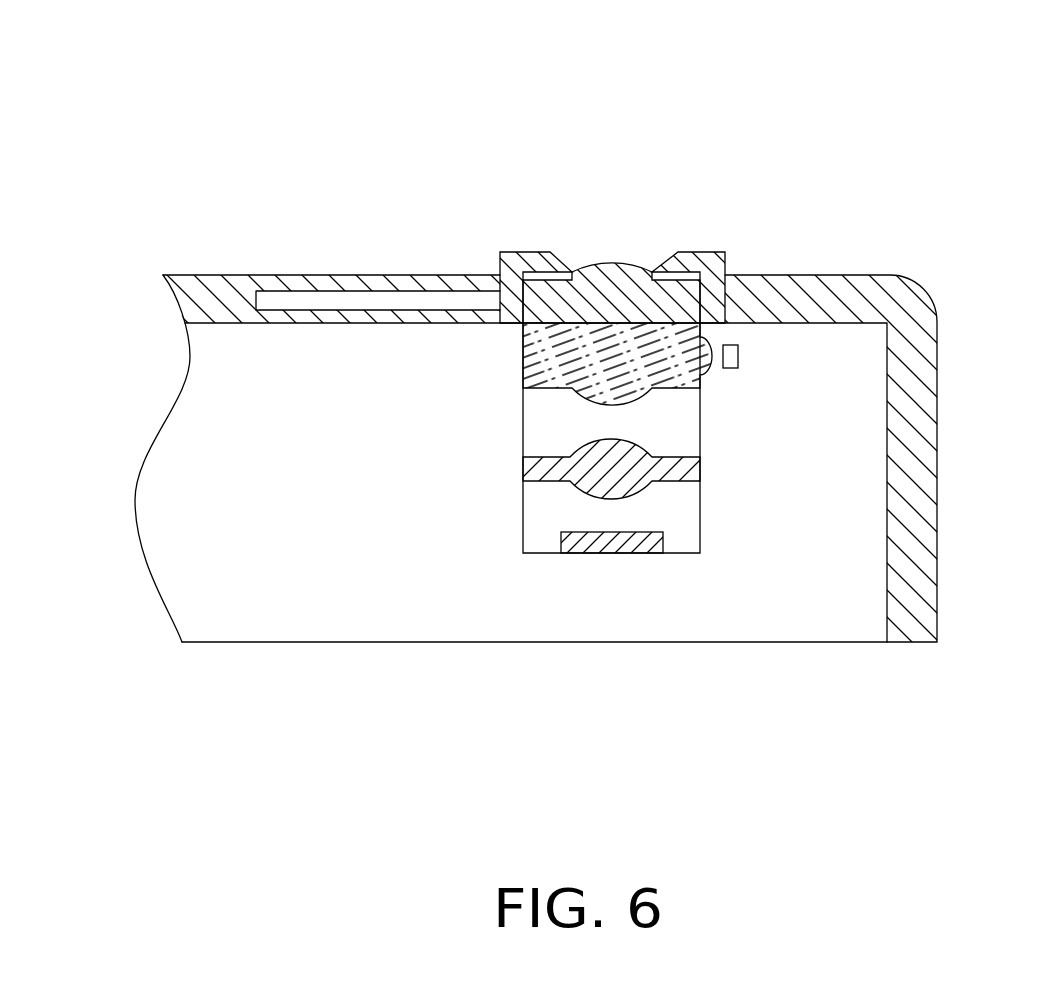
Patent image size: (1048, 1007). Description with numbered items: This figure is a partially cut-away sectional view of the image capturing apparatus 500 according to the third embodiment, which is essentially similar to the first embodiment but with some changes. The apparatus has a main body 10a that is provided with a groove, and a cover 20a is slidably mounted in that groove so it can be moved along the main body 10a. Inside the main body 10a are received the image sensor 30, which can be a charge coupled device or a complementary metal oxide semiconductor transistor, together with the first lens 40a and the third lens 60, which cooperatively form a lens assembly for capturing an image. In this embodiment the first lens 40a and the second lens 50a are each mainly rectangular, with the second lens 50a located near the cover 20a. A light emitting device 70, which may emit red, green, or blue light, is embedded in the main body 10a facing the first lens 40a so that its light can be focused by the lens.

The image capturing apparatus 500 is at (596, 55).
The main body 10a is at (920, 587).
The cover 20a is at (517, 262).
The image sensor 30 is at (645, 547).
The first lens 40a is at (670, 345).
The second lens 50a is at (655, 292).
The third lens 60 is at (690, 469).
The light emitting device 70 is at (733, 355).